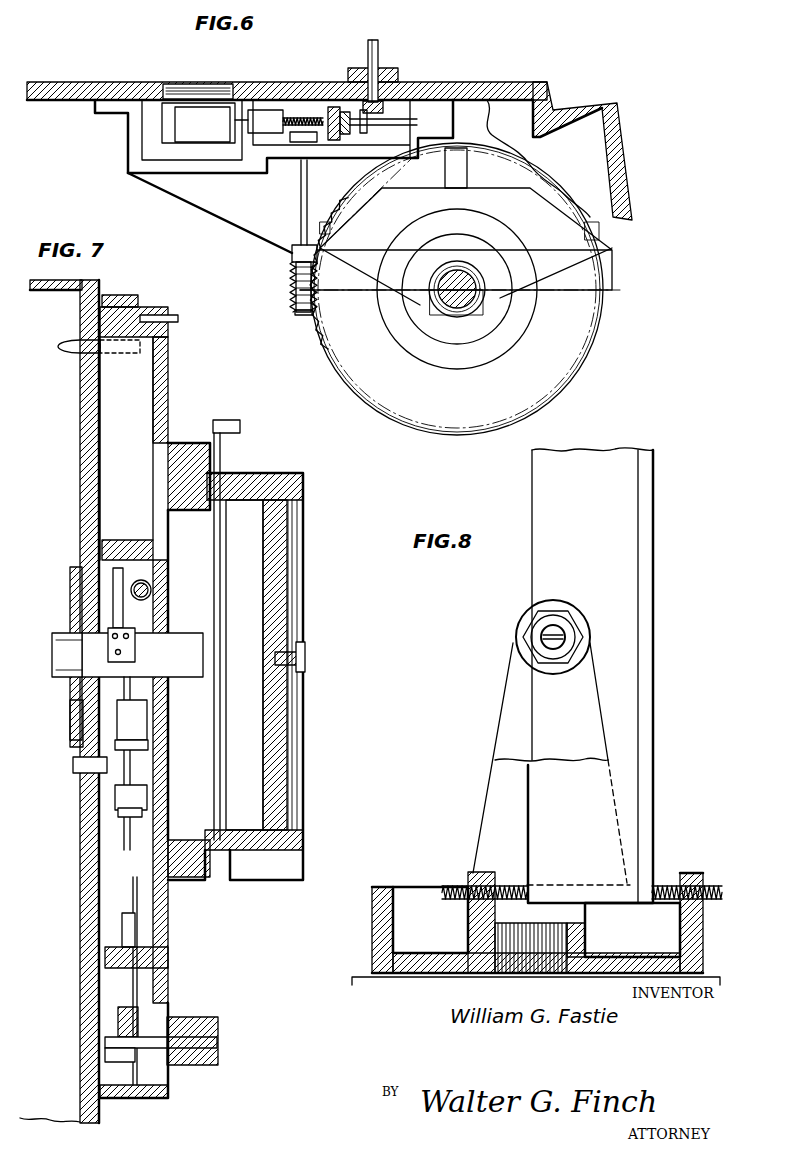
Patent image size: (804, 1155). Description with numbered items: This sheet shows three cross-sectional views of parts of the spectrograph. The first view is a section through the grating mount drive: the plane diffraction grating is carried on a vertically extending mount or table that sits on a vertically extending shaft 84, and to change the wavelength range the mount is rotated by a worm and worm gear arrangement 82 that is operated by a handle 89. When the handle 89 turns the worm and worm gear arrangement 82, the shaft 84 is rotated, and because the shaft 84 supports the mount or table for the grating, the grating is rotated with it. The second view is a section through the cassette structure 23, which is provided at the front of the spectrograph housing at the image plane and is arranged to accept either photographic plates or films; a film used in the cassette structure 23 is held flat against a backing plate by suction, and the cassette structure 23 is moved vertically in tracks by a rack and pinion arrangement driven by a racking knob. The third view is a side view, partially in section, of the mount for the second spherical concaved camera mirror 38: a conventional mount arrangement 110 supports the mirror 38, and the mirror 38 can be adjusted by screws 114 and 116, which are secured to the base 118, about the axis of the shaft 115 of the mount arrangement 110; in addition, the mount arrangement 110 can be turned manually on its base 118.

In FIG. 6, the worm and worm gear arrangement 82 is at (288, 274).
In FIG. 6, the vertically extending shaft 84 is at (473, 297).
In FIG. 6, the handle 89 is at (382, 63).
In FIG. 7, the cassette structure 23 is at (306, 632).
In FIG. 8, the mirror 38 is at (617, 540).
In FIG. 8, the mount arrangement 110 is at (657, 710).
In FIG. 8, the screw 114 is at (461, 887).
In FIG. 8, the shaft 115 is at (563, 627).
In FIG. 8, the screw 116 is at (670, 885).
In FIG. 8, the base 118 is at (412, 975).